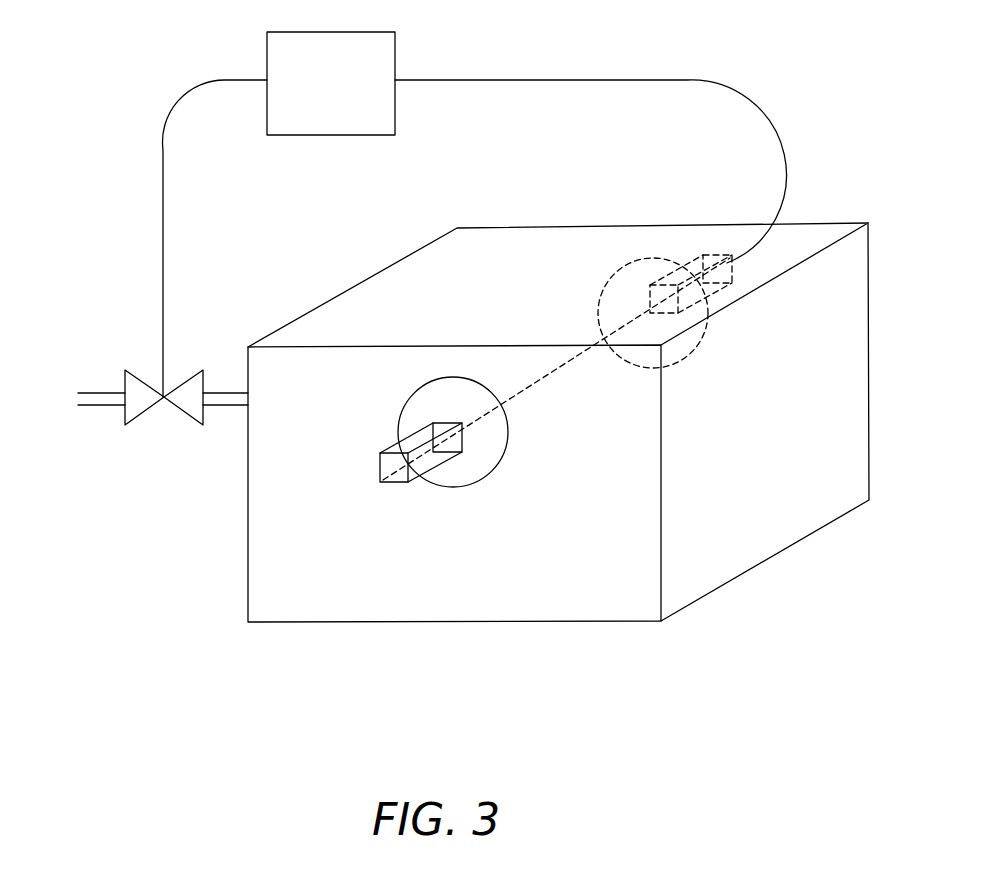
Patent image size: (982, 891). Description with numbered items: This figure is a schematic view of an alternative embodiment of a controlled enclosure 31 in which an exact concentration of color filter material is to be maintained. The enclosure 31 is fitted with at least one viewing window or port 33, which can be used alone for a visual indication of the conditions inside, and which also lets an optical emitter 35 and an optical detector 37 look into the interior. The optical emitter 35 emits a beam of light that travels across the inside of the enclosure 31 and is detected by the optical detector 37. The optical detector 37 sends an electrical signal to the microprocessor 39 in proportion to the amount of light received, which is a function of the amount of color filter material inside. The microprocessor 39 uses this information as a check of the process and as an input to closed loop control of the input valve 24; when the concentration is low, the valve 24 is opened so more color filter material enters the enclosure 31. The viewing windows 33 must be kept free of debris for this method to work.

The input valve 24 is at (140, 378).
The controlled enclosure 31 is at (823, 223).
The viewing window 33 is at (503, 463).
The optical emitter 35 is at (400, 483).
The optical detector 37 is at (690, 265).
The microprocessor 39 is at (395, 45).